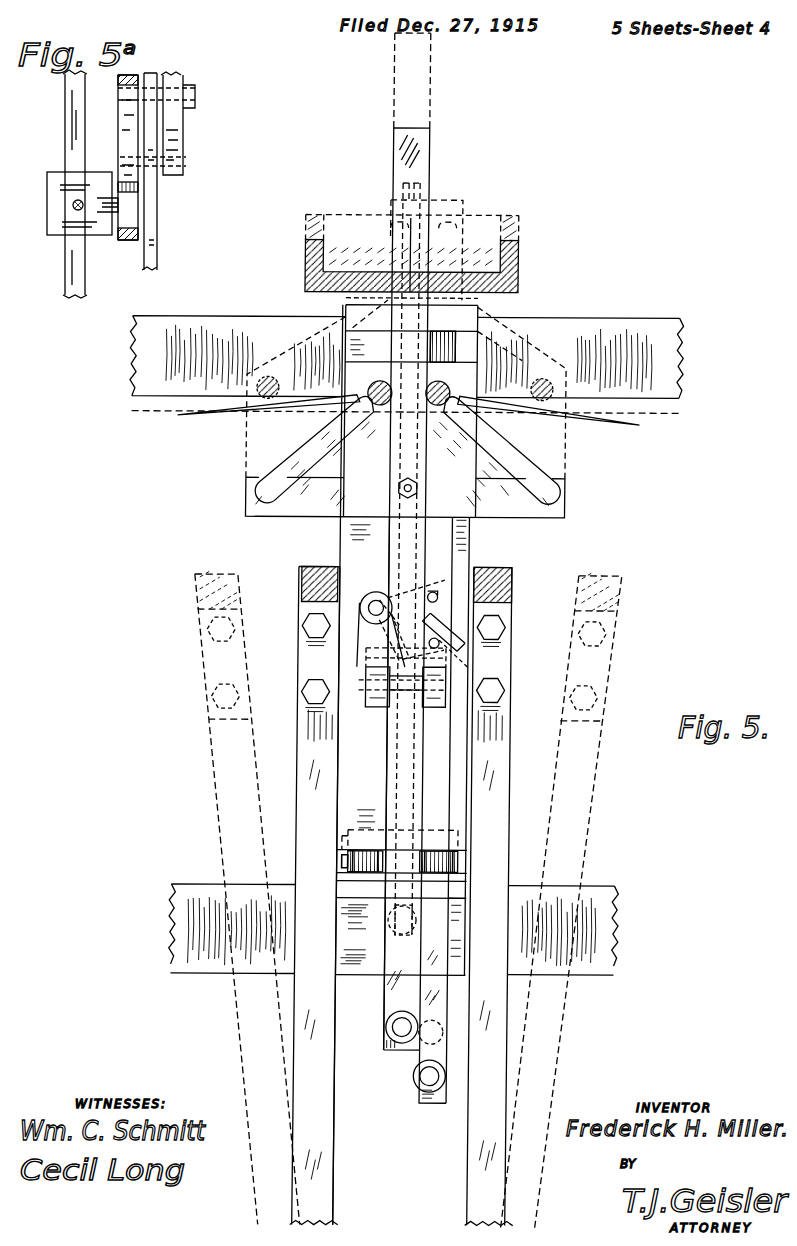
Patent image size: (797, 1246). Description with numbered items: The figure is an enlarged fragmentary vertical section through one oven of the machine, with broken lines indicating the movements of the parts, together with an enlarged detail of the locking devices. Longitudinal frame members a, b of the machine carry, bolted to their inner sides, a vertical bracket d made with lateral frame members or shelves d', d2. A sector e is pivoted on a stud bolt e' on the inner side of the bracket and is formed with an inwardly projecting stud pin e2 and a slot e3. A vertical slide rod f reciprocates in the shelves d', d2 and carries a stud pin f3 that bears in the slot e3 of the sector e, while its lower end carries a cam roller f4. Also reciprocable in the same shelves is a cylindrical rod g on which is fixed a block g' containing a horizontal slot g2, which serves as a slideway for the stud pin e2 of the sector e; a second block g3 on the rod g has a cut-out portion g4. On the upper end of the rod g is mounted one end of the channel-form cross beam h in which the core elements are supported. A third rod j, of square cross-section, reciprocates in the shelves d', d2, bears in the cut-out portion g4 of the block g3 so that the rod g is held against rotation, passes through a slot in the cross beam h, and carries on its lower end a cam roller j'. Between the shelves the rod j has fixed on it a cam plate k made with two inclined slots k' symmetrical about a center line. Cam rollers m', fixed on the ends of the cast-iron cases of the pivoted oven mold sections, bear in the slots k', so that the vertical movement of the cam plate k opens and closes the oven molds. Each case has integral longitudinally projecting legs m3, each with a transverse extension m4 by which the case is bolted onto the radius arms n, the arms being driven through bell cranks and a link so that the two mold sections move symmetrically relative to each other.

In FIG. 5, the longitudinal frame member a is at (690, 357).
In FIG. 5, the longitudinal frame member b is at (606, 928).
In FIG. 5A, the vertical bracket d is at (202, 123).
In FIG. 5, the vertical bracket d is at (478, 653).
In FIG. 5, the lateral frame member d' is at (352, 401).
In FIG. 5, the lateral frame member d2 is at (352, 885).
In FIG. 5A, the sector e is at (117, 157).
In FIG. 5, the sector e is at (386, 630).
In FIG. 5A, the stud bolt e' is at (184, 96).
In FIG. 5, the stud bolt e' is at (353, 623).
In FIG. 5A, the stud pin e2 is at (118, 205).
In FIG. 5, the stud pin e2 is at (392, 686).
In FIG. 5A, the slot e3 is at (140, 190).
In FIG. 5, the slot e3 is at (440, 600).
In FIG. 5A, the vertical slide rod f is at (152, 256).
In FIG. 5, the vertical slide rod f is at (460, 207).
In FIG. 5A, the stud pin f3 is at (160, 160).
In FIG. 5, the stud pin f3 is at (426, 633).
In FIG. 5, the cam roller f4 is at (452, 1078).
In FIG. 5A, the cylindrical rod g is at (52, 184).
In FIG. 5, the cylindrical rod g is at (286, 765).
In FIG. 5A, the block g' is at (63, 203).
In FIG. 5, the block g' is at (416, 677).
In FIG. 5A, the horizontal slot g2 is at (98, 203).
In FIG. 5, the horizontal slot g2 is at (402, 690).
In FIG. 5, the block g3 is at (428, 866).
In FIG. 5, the cut-out portion g4 is at (421, 859).
In FIG. 5, the cross beam h is at (518, 225).
In FIG. 5, the third rod j is at (319, 544).
In FIG. 5, the cam roller j' is at (376, 962).
In FIG. 5, the cam plate k is at (413, 397).
In FIG. 5, the inclined slot k' is at (409, 497).
In FIG. 5, the cam roller m' is at (406, 408).
In FIG. 5, the longitudinally projecting leg m3 is at (302, 577).
In FIG. 5, the transverse extension m4 is at (300, 738).
In FIG. 5, the radius arm n is at (568, 772).